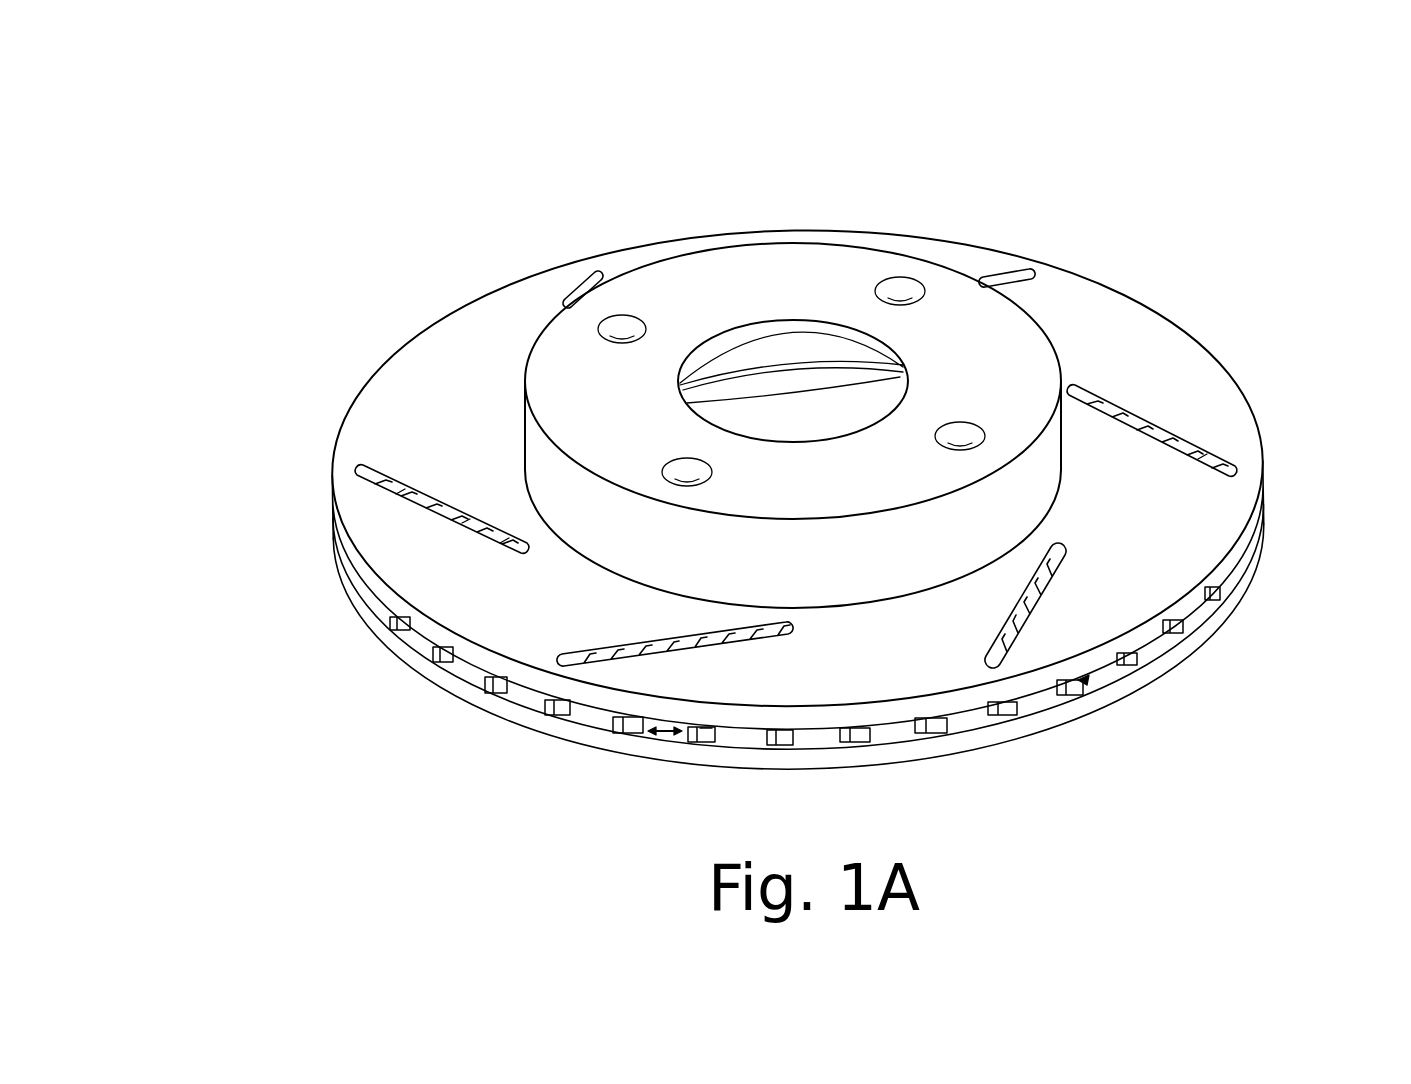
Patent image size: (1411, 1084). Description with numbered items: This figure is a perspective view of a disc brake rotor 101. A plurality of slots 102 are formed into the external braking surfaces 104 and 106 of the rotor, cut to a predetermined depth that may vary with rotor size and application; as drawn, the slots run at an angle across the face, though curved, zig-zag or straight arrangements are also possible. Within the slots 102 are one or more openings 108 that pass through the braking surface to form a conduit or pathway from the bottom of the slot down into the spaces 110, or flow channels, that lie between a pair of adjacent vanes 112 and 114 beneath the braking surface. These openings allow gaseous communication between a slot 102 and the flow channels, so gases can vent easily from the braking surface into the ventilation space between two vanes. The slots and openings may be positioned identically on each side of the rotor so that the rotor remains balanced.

The disc brake rotor 101 is at (379, 192).
The slots 102 is at (596, 273).
The external braking surface 104 is at (413, 393).
The external braking surface 106 is at (413, 675).
The openings 108 is at (1200, 460).
The spaces (flow channels) 110 is at (665, 738).
The vane 112 is at (625, 722).
The vane 114 is at (708, 740).